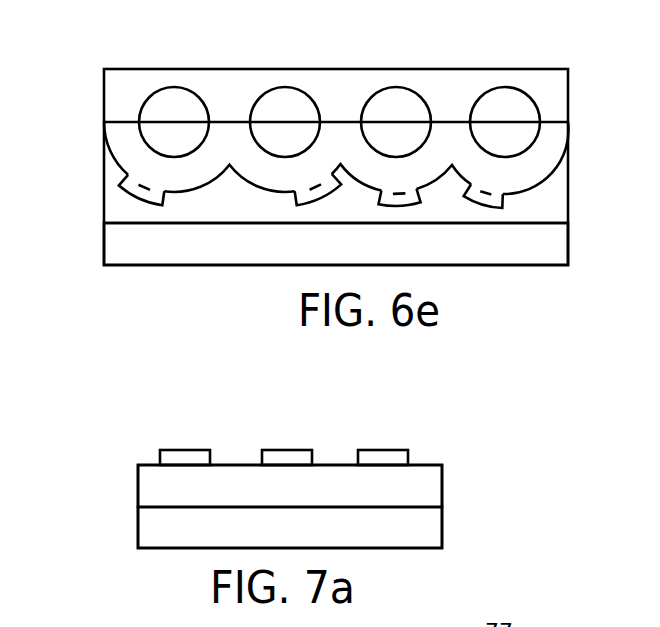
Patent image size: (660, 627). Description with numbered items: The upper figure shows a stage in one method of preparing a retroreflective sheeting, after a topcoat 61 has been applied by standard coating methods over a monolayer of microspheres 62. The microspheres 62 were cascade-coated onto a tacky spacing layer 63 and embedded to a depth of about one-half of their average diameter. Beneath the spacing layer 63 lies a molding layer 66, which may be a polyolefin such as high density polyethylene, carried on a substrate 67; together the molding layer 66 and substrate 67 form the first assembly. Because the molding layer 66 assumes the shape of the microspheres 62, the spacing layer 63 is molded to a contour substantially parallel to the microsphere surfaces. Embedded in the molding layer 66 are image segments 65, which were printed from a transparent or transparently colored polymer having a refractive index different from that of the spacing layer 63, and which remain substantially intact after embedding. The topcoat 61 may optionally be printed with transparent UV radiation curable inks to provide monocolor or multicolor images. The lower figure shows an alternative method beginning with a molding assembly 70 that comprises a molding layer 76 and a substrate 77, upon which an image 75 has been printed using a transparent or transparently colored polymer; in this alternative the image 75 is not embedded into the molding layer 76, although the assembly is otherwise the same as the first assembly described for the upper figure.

In FIG. 6e, the topcoat 61 is at (553, 83).
In FIG. 6e, the microspheres 62 is at (522, 113).
In FIG. 6e, the spacing layer 63 is at (547, 148).
In FIG. 6e, the image segments 65 is at (507, 203).
In FIG. 6e, the molding layer 66 is at (555, 212).
In FIG. 6e, the substrate 67 is at (553, 247).
In FIG. 7a, the molding assembly 70 is at (448, 465).
In FIG. 7a, the image 75 is at (395, 455).
In FIG. 7a, the molding layer 76 is at (418, 480).
In FIG. 7a, the substrate 77 is at (420, 535).